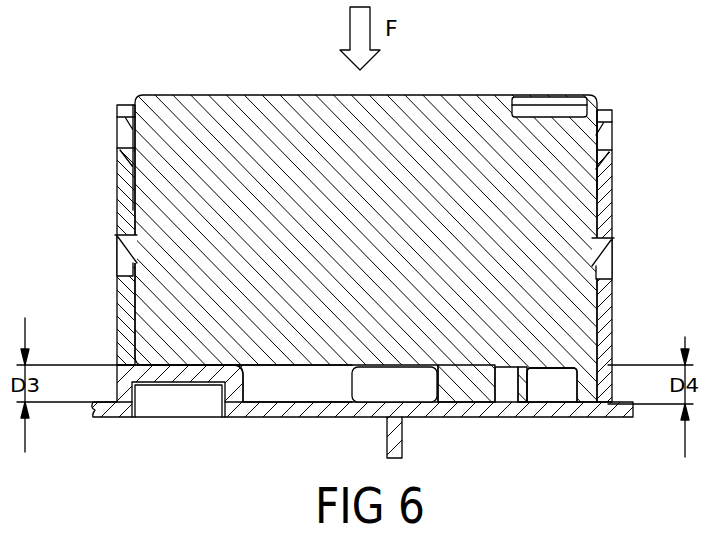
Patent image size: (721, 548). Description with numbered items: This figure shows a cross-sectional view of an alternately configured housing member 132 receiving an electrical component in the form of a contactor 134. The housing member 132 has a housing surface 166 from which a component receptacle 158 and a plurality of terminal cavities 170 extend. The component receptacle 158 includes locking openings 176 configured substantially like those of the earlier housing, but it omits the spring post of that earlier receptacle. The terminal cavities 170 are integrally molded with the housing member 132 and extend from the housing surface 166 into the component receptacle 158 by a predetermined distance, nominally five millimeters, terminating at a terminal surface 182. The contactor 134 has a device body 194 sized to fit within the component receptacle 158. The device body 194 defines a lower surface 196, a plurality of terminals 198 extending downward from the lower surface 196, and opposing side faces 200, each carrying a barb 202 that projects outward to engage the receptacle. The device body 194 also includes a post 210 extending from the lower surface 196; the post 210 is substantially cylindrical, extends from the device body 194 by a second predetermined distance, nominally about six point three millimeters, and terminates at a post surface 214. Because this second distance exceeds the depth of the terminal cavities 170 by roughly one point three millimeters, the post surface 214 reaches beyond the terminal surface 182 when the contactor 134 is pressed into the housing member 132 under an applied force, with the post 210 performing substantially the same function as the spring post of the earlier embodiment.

The contactor 134 is at (258, 108).
The device body 194 is at (472, 108).
The locking openings 176 is at (108, 278).
The opposing side faces 200 is at (133, 145).
The barb 202 is at (118, 241).
The component receptacle 158 is at (604, 318).
The housing member 132 is at (575, 408).
The post 210 is at (468, 385).
The terminal cavities 170 is at (163, 372).
The terminal surface 182 is at (550, 366).
The terminals 198 is at (528, 393).
The post surface 214 is at (482, 405).
The housing surface 166 is at (327, 385).
The lower surface 196 is at (293, 366).